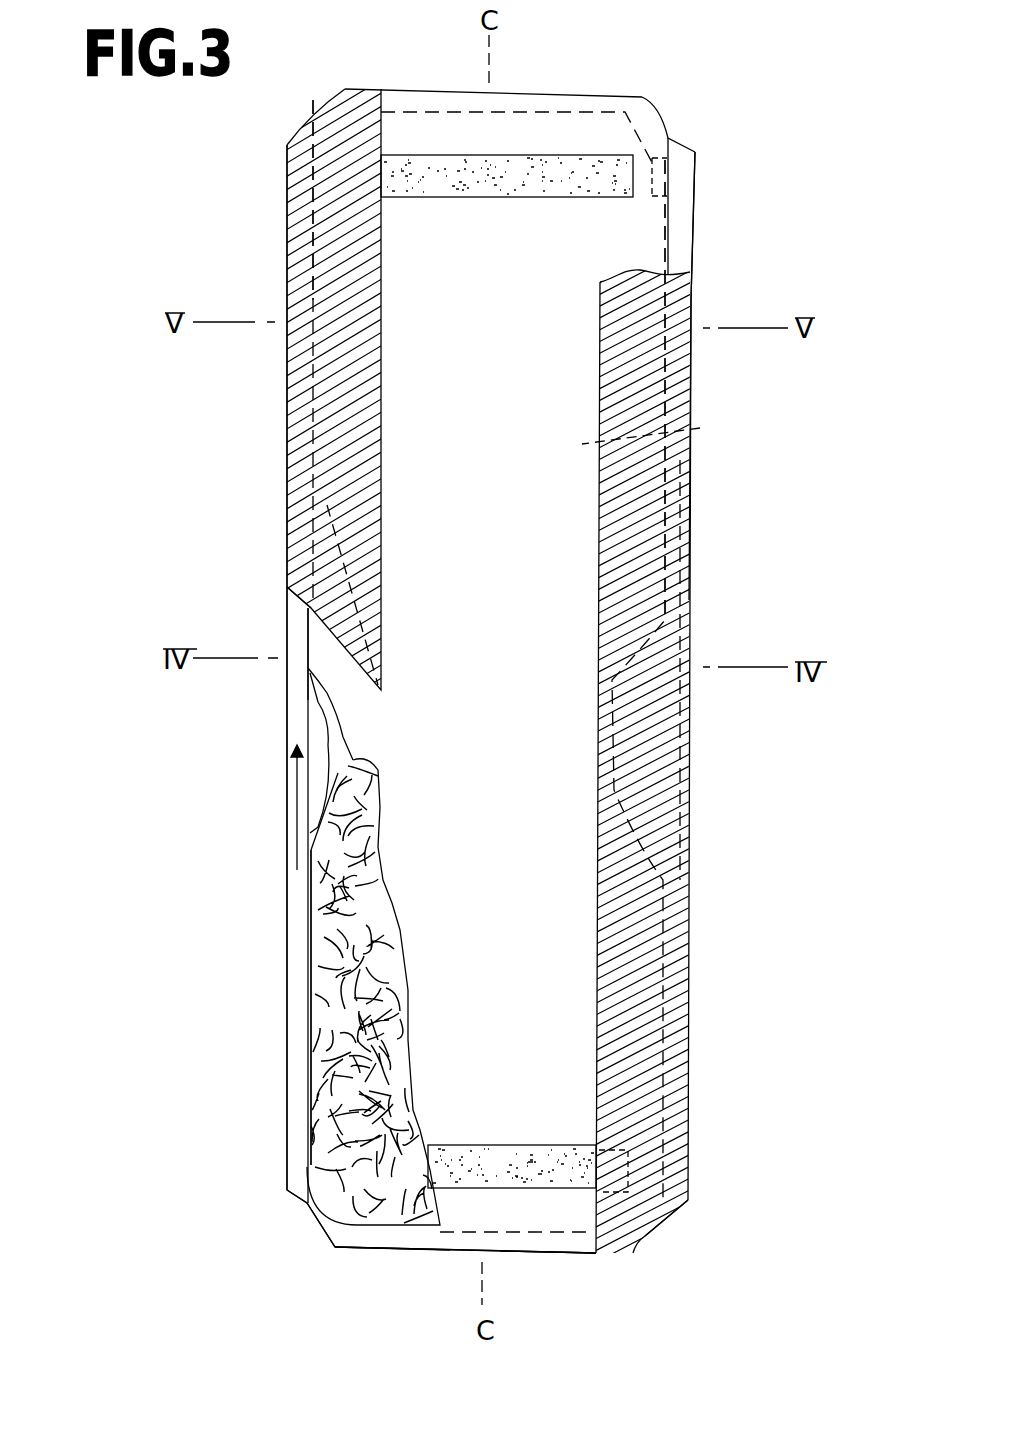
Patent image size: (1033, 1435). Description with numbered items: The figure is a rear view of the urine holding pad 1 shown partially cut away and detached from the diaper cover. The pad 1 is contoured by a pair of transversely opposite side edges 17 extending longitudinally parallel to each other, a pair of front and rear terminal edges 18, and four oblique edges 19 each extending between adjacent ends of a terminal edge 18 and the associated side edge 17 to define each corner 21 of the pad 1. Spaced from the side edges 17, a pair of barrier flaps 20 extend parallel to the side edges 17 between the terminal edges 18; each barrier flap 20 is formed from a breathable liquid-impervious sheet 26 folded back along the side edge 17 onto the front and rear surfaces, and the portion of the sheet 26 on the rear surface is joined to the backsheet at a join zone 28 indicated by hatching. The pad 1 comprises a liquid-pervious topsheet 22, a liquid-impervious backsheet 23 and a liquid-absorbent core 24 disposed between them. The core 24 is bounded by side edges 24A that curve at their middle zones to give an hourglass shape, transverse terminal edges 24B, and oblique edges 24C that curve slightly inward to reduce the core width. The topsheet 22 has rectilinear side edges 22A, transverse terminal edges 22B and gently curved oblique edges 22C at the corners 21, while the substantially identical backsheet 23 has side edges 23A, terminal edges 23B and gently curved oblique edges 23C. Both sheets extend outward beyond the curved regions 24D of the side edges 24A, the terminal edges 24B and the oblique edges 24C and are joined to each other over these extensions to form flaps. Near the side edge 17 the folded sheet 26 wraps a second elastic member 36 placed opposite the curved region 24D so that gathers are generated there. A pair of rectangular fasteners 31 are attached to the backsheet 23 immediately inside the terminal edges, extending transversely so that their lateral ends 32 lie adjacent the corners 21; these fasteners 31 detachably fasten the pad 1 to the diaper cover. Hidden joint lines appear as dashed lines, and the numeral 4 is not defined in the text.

The urine holding pad 1 is at (628, 41).
The hidden joint line 4 is at (653, 425).
The side edge 17 is at (288, 479).
The terminal edge 18 is at (527, 90).
The oblique edge 19 is at (644, 100).
The barrier flap 20 is at (382, 460).
The corner 21 is at (362, 133).
The liquid-pervious topsheet 22 is at (352, 738).
The side edge of topsheet 22A is at (308, 700).
The terminal edge of topsheet 22B is at (377, 1250).
The oblique edge of topsheet 22C is at (312, 1222).
The liquid-impervious backsheet 23 is at (390, 872).
The side edge of backsheet 23A is at (303, 618).
The terminal edge of backsheet 23B is at (575, 1255).
The oblique edge of backsheet 23C is at (686, 1206).
The liquid-absorbent core 24 is at (668, 962).
The side edge of core 24A is at (664, 296).
The terminal edge of core 24B is at (483, 112).
The oblique edge of core 24C is at (648, 162).
The curved region of core side edge 24D is at (348, 772).
The breathable liquid-impervious sheet 26 is at (368, 340).
The join zone 28 is at (330, 381).
The rectangular fastener 31 is at (430, 200).
The lateral end of fastener 32 is at (613, 197).
The second elastic member 36 is at (292, 797).